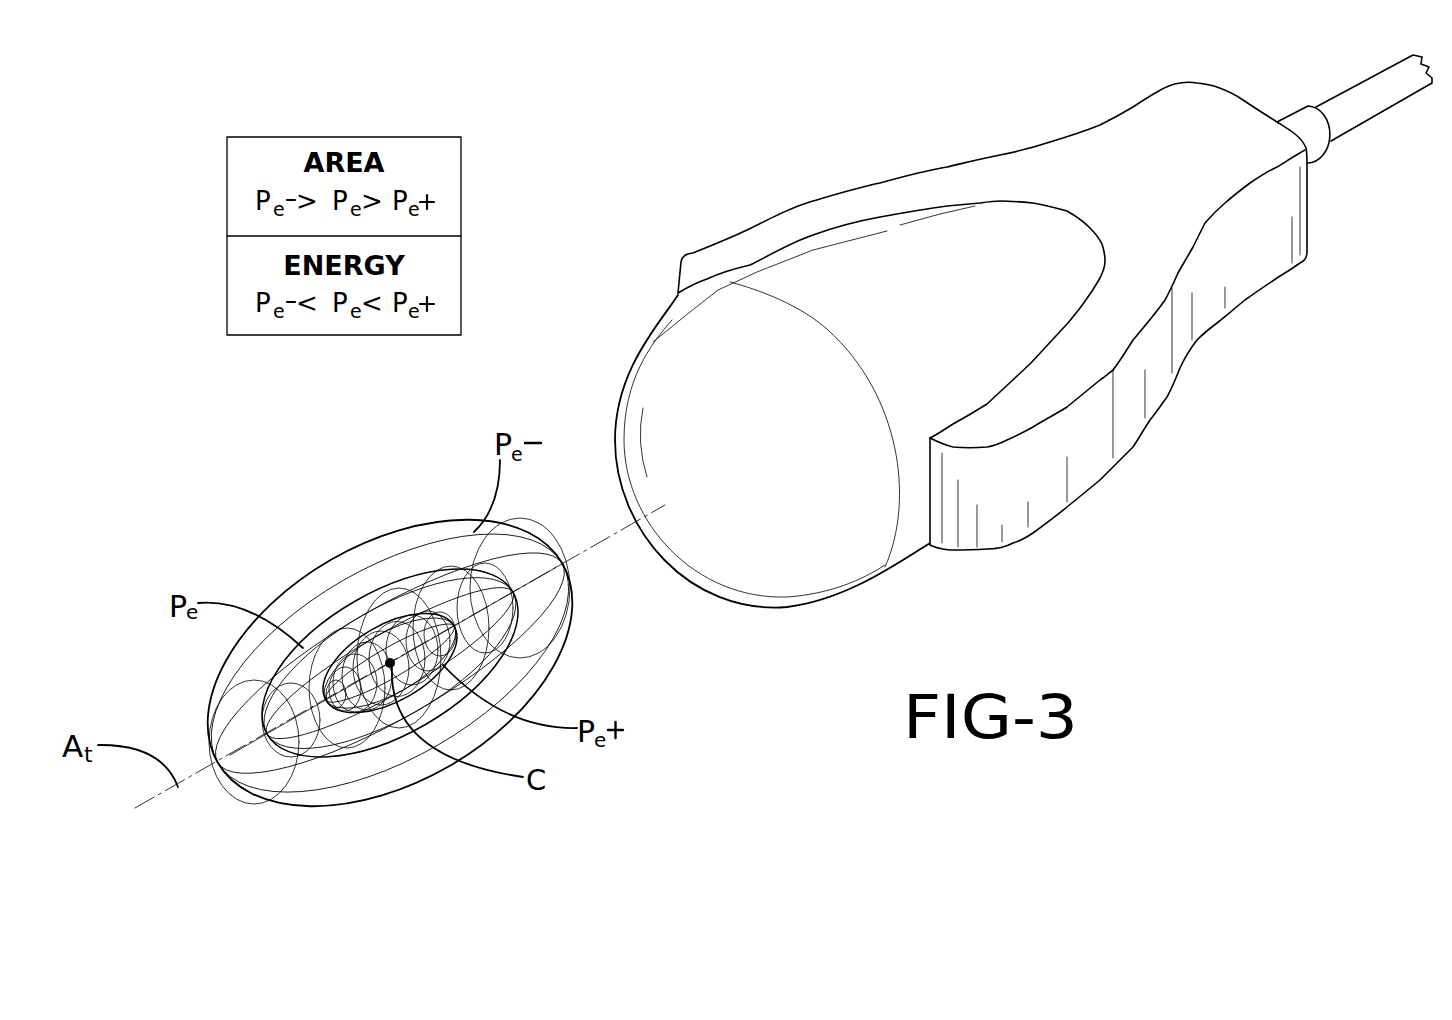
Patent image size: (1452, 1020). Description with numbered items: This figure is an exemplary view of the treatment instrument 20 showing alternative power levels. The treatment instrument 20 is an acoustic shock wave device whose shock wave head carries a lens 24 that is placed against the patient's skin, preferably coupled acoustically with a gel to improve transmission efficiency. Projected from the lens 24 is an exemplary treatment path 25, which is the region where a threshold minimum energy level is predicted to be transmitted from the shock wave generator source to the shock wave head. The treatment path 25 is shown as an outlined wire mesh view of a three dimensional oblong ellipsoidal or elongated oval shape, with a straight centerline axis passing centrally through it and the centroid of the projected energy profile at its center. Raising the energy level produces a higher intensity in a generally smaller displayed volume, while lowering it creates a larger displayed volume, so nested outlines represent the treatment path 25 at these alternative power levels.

The treatment instrument 20 is at (893, 175).
The lens 24 is at (712, 385).
The treatment path 25 is at (370, 627).